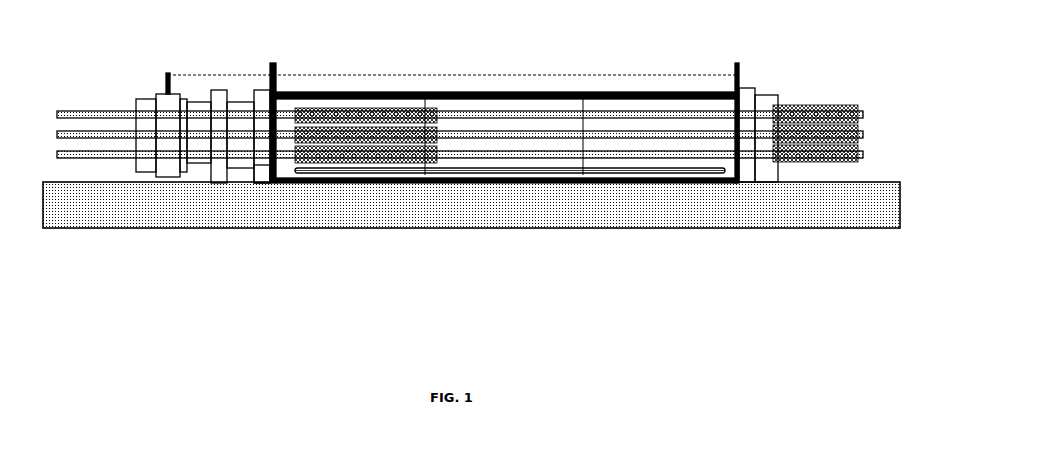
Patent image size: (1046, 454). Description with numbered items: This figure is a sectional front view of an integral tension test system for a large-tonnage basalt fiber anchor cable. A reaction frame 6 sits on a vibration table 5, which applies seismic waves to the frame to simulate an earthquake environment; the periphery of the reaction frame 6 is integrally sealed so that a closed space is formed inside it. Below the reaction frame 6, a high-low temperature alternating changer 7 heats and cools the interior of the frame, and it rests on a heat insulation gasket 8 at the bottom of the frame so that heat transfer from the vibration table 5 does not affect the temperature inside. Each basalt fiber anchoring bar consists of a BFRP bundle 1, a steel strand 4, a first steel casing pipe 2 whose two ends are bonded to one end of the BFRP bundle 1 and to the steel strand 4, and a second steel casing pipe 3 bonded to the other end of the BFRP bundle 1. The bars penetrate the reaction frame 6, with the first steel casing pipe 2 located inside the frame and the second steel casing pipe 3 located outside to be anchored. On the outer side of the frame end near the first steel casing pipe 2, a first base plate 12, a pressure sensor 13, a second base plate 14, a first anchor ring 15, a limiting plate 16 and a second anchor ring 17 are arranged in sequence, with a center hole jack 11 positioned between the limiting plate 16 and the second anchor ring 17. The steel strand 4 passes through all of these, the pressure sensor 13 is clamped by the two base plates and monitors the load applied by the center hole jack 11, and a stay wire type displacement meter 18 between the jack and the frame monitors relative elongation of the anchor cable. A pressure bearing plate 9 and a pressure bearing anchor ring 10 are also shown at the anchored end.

The BFRP bundle 1 is at (607, 108).
The first steel casing pipe 2 is at (375, 108).
The second steel casing pipe 3 is at (815, 108).
The steel strand 4 is at (113, 155).
The vibration table 5 is at (578, 217).
The reaction frame 6 is at (520, 92).
The high-low temperature alternating changer 7 is at (458, 172).
The heat insulation gasket 8 is at (503, 176).
The pressure bearing plate 9 is at (745, 90).
The pressure bearing anchor ring 10 is at (770, 98).
The center hole jack 11 is at (167, 85).
The first base plate 12 is at (260, 168).
The pressure sensor 13 is at (243, 102).
The second base plate 14 is at (218, 98).
The first anchor ring 15 is at (202, 164).
The limiting plate 16 is at (183, 99).
The second anchor ring 17 is at (147, 99).
The stay wire type displacement meter 18 is at (273, 68).